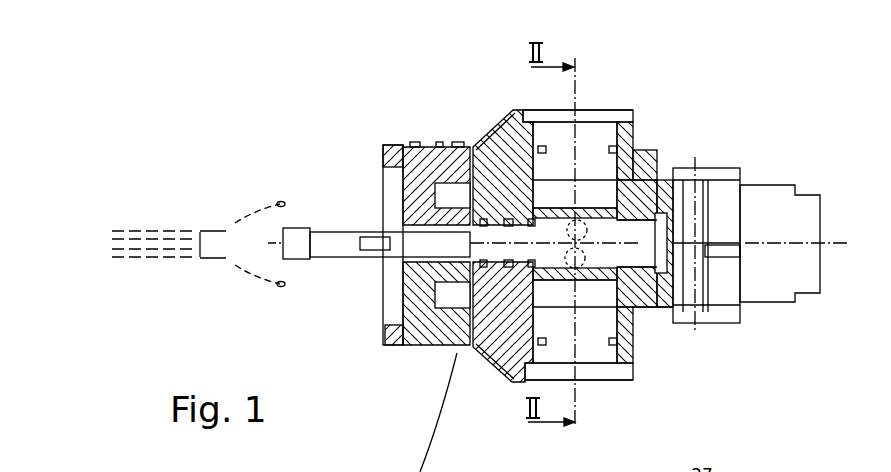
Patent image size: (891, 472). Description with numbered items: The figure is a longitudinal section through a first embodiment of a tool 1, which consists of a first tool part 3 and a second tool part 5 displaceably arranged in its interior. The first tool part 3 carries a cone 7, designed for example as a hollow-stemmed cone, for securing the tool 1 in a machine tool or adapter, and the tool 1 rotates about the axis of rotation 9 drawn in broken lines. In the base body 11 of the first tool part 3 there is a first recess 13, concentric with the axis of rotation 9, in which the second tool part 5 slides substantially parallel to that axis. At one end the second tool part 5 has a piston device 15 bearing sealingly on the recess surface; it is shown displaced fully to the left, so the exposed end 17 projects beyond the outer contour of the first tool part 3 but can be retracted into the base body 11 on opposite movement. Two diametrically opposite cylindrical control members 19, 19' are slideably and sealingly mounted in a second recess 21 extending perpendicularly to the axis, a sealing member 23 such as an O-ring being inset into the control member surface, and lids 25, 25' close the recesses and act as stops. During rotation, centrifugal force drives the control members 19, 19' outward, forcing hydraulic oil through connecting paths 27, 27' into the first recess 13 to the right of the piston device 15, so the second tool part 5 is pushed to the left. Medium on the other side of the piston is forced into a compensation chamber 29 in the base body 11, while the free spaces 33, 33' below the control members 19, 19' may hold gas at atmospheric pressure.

The tool 1 is at (678, 113).
The first tool part 3 is at (488, 131).
The second tool part 5 is at (365, 233).
The cone 7 is at (775, 210).
The axis of rotation 9 is at (805, 243).
The base body 11 is at (492, 290).
The first recess 13 is at (635, 237).
The piston device 15 is at (446, 356).
The exposed end 17 is at (280, 252).
The control member 19 is at (594, 128).
The control member 19' is at (594, 358).
The second recess 21 is at (522, 185).
The sealing member 23 is at (555, 150).
The lid 25 is at (578, 96).
The lid 25' is at (579, 417).
The connecting path 27 is at (652, 121).
The connecting path 27' is at (653, 357).
The compensation chamber 29 is at (468, 318).
The free space 33 is at (696, 121).
The free space 33' is at (699, 335).